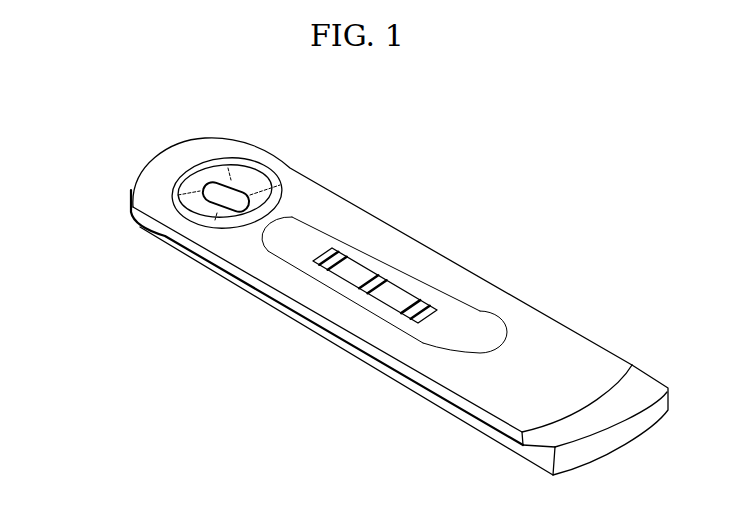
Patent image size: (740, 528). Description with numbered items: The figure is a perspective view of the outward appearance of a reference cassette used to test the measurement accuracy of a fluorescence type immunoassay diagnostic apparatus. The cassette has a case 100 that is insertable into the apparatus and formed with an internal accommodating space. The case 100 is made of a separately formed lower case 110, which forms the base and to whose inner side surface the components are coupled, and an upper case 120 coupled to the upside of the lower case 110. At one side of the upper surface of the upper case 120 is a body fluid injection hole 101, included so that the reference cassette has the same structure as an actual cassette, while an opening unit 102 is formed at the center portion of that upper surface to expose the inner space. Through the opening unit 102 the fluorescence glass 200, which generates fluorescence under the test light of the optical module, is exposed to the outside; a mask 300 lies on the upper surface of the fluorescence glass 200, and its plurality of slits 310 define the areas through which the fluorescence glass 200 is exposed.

The case 100 is at (541, 220).
The lower case 110 is at (157, 240).
The upper case 120 is at (147, 193).
The body fluid injection hole 101 is at (217, 192).
The mask 300 is at (337, 246).
The slits 310 is at (327, 294).
The fluorescence glass 200 is at (345, 276).
The opening unit 102 is at (390, 280).